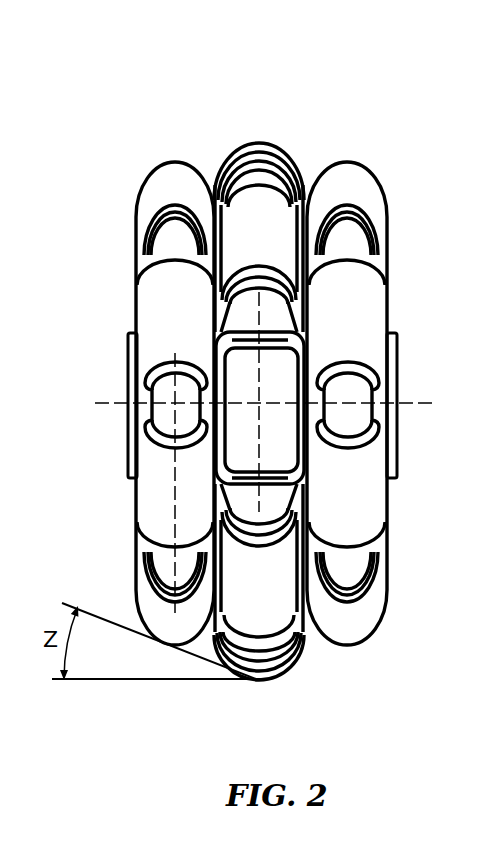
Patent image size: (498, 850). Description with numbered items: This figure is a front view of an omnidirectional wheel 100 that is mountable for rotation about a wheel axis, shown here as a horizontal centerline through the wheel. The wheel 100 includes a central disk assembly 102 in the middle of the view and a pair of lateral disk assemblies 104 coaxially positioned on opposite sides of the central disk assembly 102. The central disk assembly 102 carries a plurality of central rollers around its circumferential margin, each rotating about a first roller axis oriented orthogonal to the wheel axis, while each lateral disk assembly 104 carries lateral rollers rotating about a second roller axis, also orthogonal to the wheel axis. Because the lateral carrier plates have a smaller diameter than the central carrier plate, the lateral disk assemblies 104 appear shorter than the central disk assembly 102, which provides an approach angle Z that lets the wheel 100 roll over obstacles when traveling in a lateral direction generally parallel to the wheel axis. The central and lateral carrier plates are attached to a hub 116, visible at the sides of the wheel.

The omnidirectional wheel 100 is at (147, 93).
The central disk assembly 102 is at (265, 128).
The lateral disk assemblies 104 is at (172, 153).
The hub 116 is at (398, 427).